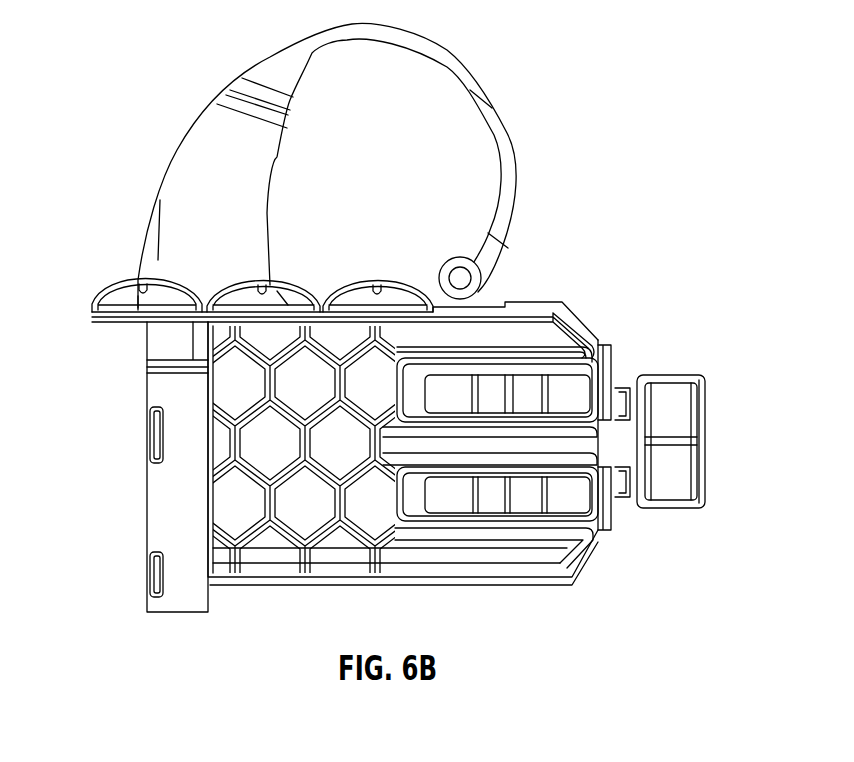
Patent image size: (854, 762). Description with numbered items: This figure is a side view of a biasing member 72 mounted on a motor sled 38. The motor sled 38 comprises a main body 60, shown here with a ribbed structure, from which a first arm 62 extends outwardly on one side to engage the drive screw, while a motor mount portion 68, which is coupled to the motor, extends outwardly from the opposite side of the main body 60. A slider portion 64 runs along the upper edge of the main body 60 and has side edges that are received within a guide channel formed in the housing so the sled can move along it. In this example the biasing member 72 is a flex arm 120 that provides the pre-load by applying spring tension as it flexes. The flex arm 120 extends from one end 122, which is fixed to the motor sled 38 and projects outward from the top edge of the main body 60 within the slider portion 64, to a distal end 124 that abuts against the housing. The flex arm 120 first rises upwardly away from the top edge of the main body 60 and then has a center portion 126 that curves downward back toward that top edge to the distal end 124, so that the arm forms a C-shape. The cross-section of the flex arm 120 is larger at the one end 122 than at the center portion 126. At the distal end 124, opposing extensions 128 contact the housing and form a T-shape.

The motor sled 38 is at (604, 292).
The main body 60 is at (363, 510).
The first arm 62 is at (672, 413).
The slider portion 64 is at (105, 296).
The motor mount portion 68 is at (157, 500).
The biasing member 72 is at (466, 37).
The flex arm 120 is at (267, 57).
The one end 122 is at (178, 192).
The distal end 124 is at (490, 262).
The center portion 126 is at (483, 87).
The opposing extensions 128 is at (445, 272).